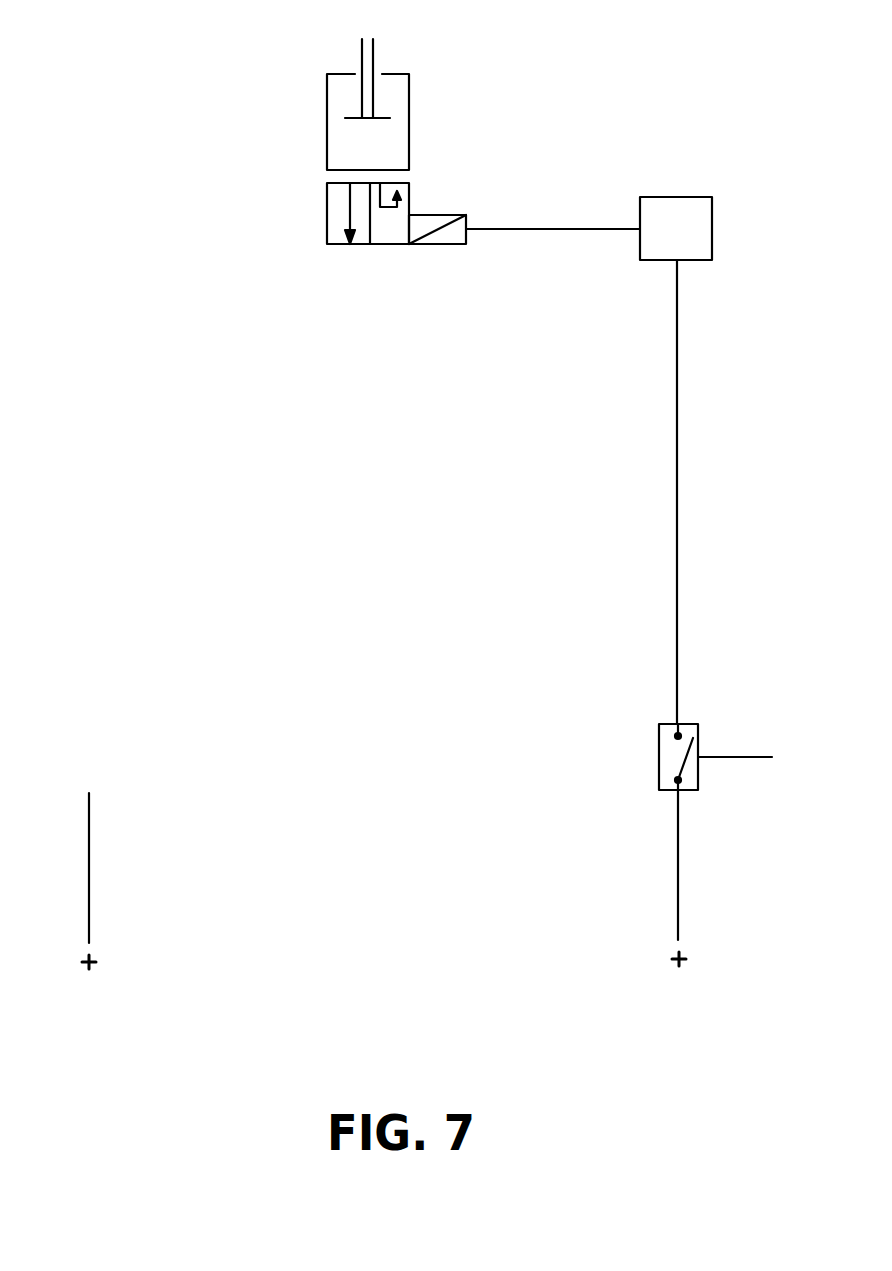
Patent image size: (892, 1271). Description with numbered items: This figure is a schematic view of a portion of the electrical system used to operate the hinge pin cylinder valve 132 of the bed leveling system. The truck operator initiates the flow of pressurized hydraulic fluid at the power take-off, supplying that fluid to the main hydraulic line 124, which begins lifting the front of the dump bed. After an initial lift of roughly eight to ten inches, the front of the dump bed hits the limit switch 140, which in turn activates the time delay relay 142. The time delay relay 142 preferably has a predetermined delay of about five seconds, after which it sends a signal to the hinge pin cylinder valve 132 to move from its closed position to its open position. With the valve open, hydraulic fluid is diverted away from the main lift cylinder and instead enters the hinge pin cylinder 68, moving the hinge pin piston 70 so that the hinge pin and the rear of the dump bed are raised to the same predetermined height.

The hinge pin piston 70 is at (375, 61).
The hinge pin cylinder 68 is at (409, 128).
The hinge pin cylinder valve 132 is at (388, 244).
The time delay relay 142 is at (640, 243).
The main hydraulic line 124 is at (677, 465).
The limit switch 140 is at (659, 757).